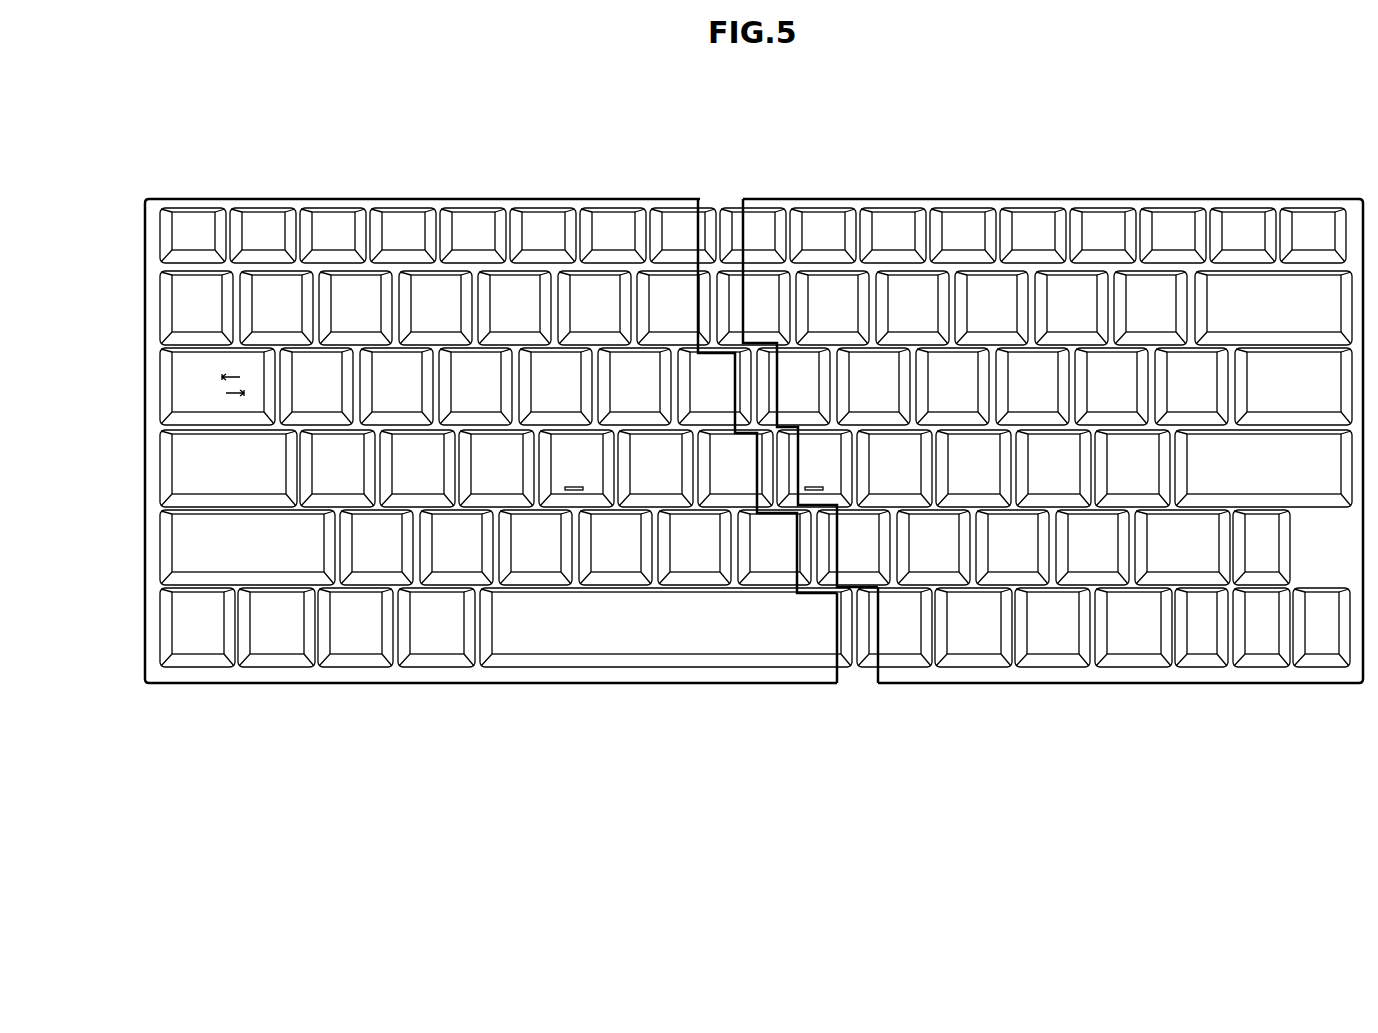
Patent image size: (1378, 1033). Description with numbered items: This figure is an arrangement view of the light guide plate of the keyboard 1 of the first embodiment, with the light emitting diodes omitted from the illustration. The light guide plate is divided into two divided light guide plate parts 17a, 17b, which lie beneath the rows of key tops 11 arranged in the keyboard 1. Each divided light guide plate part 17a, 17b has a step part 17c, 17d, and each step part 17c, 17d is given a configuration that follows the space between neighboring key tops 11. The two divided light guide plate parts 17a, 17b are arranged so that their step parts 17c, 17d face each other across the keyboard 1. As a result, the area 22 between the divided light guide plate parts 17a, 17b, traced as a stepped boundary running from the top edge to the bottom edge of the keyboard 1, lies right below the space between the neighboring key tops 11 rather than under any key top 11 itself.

The keyboard 1 is at (1131, 181).
The key top 11 is at (190, 222).
The divided light guide plate part 17a is at (506, 375).
The divided light guide plate part 17b is at (926, 199).
The step part 17c is at (838, 686).
The step part 17d is at (877, 686).
The area 22 is at (712, 179).